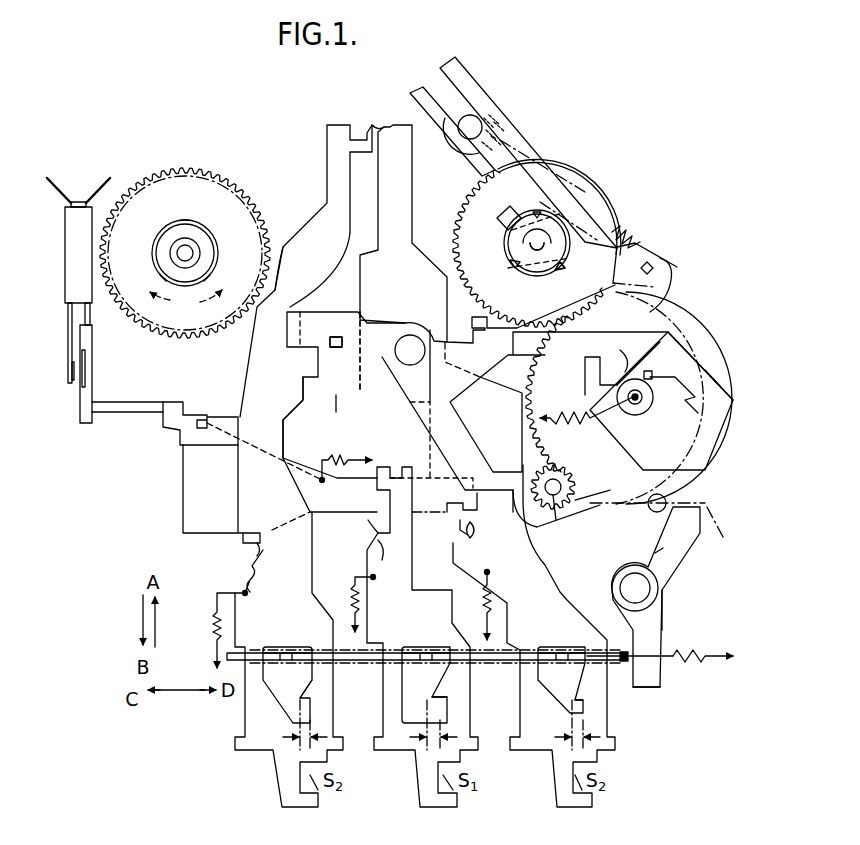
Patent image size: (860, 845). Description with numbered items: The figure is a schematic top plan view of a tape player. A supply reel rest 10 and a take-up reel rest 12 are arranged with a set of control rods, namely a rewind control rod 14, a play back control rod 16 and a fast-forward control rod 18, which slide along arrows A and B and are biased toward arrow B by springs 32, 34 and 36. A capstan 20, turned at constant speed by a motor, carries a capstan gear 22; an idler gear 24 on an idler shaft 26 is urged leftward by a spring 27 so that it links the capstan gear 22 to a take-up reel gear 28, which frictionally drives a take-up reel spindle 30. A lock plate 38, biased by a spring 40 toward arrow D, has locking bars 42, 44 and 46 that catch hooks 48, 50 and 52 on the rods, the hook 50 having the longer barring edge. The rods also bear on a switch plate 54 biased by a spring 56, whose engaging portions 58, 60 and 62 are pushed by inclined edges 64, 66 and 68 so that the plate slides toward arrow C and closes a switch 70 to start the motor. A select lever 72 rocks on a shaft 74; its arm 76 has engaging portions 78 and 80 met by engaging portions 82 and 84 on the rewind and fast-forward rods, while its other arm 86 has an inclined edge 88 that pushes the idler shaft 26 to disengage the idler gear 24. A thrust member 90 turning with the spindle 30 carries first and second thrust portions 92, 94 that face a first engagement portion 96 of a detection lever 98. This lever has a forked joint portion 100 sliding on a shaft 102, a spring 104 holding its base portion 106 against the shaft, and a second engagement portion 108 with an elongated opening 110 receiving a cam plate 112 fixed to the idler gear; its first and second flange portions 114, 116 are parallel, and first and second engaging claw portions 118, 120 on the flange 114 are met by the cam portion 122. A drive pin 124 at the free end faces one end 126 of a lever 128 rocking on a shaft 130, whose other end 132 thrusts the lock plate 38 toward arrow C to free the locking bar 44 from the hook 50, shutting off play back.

The supply reel rest 10 is at (208, 172).
The take-up reel rest 12 is at (570, 160).
The rewind control rod 14 is at (253, 748).
The play back control rod 16 is at (400, 748).
The fast-forward control rod 18 is at (535, 748).
The capstan 20 is at (568, 498).
The capstan gear 22 is at (557, 503).
The idler gear 24 is at (594, 512).
The idler shaft 26 is at (598, 452).
The spring 27 is at (570, 422).
The take-up reel gear 28 is at (588, 170).
The take-up reel spindle 30 is at (527, 267).
The spring 32 is at (214, 632).
The spring 34 is at (353, 583).
The spring 36 is at (492, 590).
The lock plate 38 is at (497, 661).
The spring 40 is at (704, 652).
The locking bar 42 is at (287, 660).
The locking bar 44 is at (425, 662).
The locking bar 46 is at (563, 662).
The hook 48 is at (305, 692).
The hook 50 is at (440, 697).
The hook 52 is at (576, 700).
The switch plate 54 is at (183, 522).
The spring 56 is at (350, 455).
The engaging portion 58 is at (262, 548).
The engaging portion 60 is at (372, 525).
The engaging portion 62 is at (476, 528).
The inclined edge 64 is at (248, 572).
The inclined edge 66 is at (383, 558).
The inclined edge 68 is at (460, 526).
The switch 70 is at (75, 275).
The select lever 72 is at (400, 318).
The shaft 74 is at (412, 335).
The arm 76 is at (352, 318).
The engaging portion 78 is at (291, 275).
The engaging portion 80 is at (336, 335).
The engaging portion 82 is at (300, 368).
The engaging portion 84 is at (336, 398).
The arm 86 is at (632, 332).
The inclined edge 88 is at (660, 296).
The thrust member 90 is at (548, 272).
The first thrust portion 92 is at (565, 272).
The second thrust portion 94 is at (503, 215).
The first engagement portion 96 is at (603, 235).
The detection lever 98 is at (653, 268).
The forked joint portion 100 is at (500, 118).
The shaft 102 is at (465, 138).
The spring 104 is at (632, 232).
The base portion 106 is at (470, 160).
The second engagement portion 108 is at (740, 462).
The elongated opening 110 is at (722, 488).
The cam plate 112 is at (628, 358).
The first flange portion 114 is at (722, 392).
The second flange portion 116 is at (625, 475).
The first engaging claw portion 118 is at (700, 330).
The second engaging claw portion 120 is at (722, 425).
The cam portion 122 is at (642, 408).
The drive pin 124 is at (705, 528).
The one end 126 is at (652, 548).
The lever 128 is at (660, 612).
The shaft 130 is at (645, 590).
The other end 132 is at (650, 678).